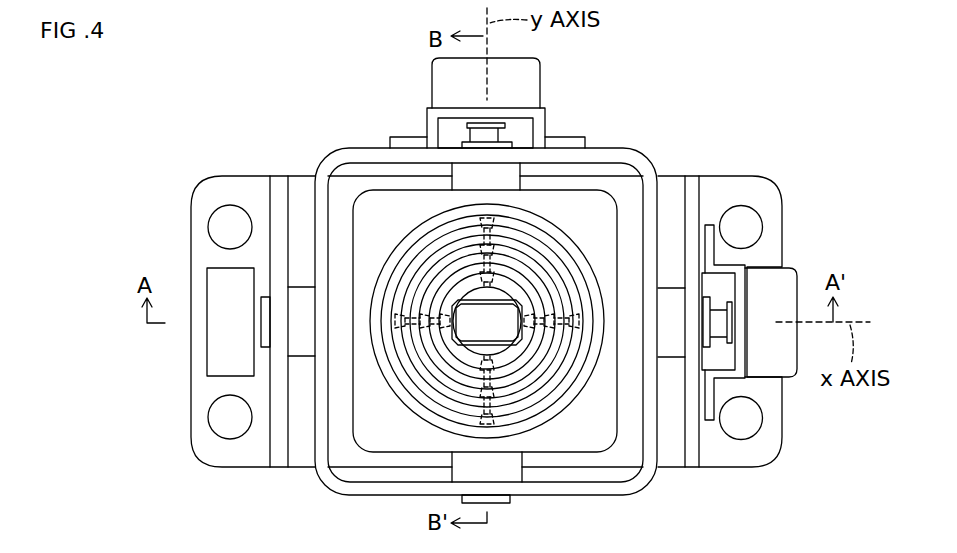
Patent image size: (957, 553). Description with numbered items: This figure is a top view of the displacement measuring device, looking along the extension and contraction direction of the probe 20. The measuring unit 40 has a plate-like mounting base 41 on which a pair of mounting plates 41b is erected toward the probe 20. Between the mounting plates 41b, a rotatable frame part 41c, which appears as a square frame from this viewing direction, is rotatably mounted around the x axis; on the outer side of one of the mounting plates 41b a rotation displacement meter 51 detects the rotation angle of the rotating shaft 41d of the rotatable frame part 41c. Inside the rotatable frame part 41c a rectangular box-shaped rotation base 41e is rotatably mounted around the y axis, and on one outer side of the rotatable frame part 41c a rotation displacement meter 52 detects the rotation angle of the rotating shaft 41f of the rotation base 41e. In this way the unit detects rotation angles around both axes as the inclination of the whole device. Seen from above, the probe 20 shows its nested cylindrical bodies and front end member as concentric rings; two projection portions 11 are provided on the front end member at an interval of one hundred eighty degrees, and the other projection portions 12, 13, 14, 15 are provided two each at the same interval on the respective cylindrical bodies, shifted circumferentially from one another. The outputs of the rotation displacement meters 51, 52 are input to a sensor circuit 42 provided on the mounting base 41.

The projection portions 11 is at (533, 335).
The projection portions 12 is at (548, 322).
The projection portions 13 is at (445, 385).
The projection portions 14 is at (575, 345).
The projection portions 15 is at (512, 368).
The probe 20 is at (411, 210).
The measuring unit 40 is at (805, 191).
The mounting base 41 is at (202, 239).
The mounting plates 41b is at (278, 180).
The rotatable frame part 41c is at (337, 160).
The rotating shaft 41d is at (666, 340).
The rotation base 41e is at (603, 205).
The rotating shaft 41f is at (508, 174).
The sensor circuit 42 is at (210, 350).
The rotation displacement meter 51 is at (813, 273).
The rotation displacement meter 52 is at (558, 84).